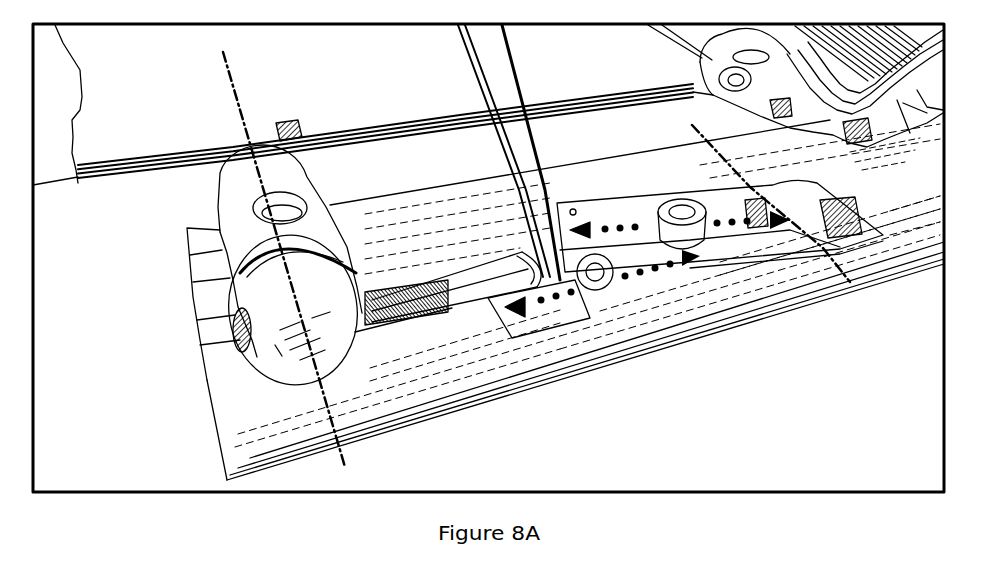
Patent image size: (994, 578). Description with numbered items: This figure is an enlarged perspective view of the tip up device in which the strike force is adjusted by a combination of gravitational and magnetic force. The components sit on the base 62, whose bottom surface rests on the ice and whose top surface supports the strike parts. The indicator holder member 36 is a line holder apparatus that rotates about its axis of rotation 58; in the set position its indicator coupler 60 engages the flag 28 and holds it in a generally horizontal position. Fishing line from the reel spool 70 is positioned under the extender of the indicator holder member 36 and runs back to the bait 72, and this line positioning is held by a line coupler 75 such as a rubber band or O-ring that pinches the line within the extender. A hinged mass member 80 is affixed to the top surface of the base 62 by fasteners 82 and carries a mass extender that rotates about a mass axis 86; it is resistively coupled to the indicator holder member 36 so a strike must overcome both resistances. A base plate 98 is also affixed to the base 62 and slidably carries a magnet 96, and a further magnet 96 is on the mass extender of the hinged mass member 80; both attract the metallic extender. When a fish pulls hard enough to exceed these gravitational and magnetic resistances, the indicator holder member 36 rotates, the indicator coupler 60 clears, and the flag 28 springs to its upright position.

The flag 28 is at (52, 108).
The indicator holder member 36 is at (237, 227).
The axis of rotation 58 is at (327, 400).
The indicator coupler 60 is at (288, 127).
The base 62 is at (725, 350).
The reel spool 70 is at (522, 77).
The bait 72 is at (472, 80).
The line coupler 75 is at (522, 243).
The hinged mass member 80 is at (733, 237).
The fasteners 82 is at (847, 220).
The mass axis 86 is at (848, 277).
The magnet 96 is at (668, 202).
The base plate 98 is at (567, 303).